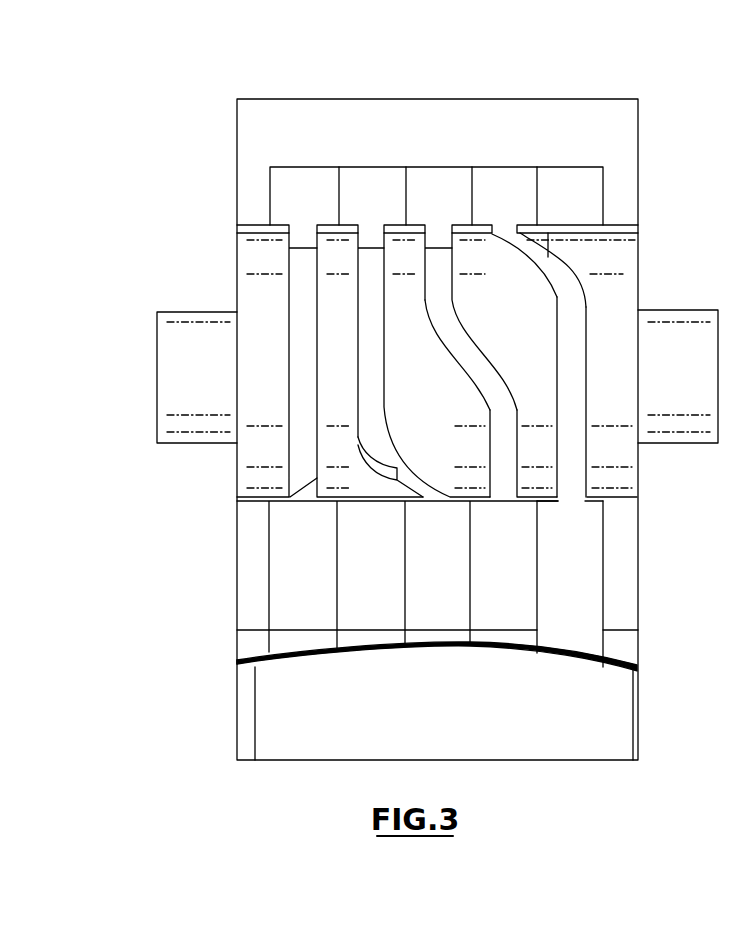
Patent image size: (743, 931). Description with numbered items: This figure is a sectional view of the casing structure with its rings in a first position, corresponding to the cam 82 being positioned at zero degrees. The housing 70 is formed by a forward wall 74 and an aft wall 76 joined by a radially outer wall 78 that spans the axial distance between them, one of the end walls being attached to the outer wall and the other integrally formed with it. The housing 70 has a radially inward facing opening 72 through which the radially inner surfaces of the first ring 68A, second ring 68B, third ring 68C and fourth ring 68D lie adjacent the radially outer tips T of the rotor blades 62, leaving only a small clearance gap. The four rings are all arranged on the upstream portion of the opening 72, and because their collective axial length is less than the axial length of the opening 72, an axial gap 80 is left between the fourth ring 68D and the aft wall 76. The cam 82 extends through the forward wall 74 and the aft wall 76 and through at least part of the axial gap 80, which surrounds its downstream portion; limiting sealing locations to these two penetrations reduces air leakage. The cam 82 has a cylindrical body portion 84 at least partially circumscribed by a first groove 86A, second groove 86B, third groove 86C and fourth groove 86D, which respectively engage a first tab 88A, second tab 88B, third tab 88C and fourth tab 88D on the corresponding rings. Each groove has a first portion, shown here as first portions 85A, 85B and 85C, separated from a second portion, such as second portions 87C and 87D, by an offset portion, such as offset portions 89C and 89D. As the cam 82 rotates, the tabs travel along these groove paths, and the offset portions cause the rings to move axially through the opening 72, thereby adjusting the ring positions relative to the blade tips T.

The rotor blades 62 is at (615, 722).
The first ring 68A is at (288, 167).
The second ring 68B is at (363, 165).
The third ring 68C is at (436, 165).
The fourth ring 68D is at (515, 165).
The housing 70 is at (622, 130).
The radially inward facing opening 72 is at (310, 645).
The forward wall 74 is at (240, 572).
The aft wall 76 is at (635, 593).
The radially outer wall 78 is at (282, 110).
The axial gap 80 is at (582, 545).
The cam 82 is at (172, 293).
The cylindrical body portion 84 is at (625, 308).
The first portion of first groove 85A is at (307, 335).
The first portion of second groove 85B is at (373, 333).
The first portion of third groove 85C is at (440, 267).
The first groove 86A is at (303, 288).
The second groove 86B is at (377, 403).
The third groove 86C is at (470, 367).
The fourth groove 86D is at (577, 323).
The second portion of third groove 87C is at (505, 460).
The second portion of fourth groove 87D is at (577, 422).
The first tab 88A is at (302, 230).
The second tab 88B is at (370, 230).
The third tab 88C is at (438, 230).
The fourth tab 88D is at (507, 230).
The offset portion of third groove 89C is at (490, 380).
The offset portion of fourth groove 89D is at (537, 250).
The radially outer tips T is at (250, 660).